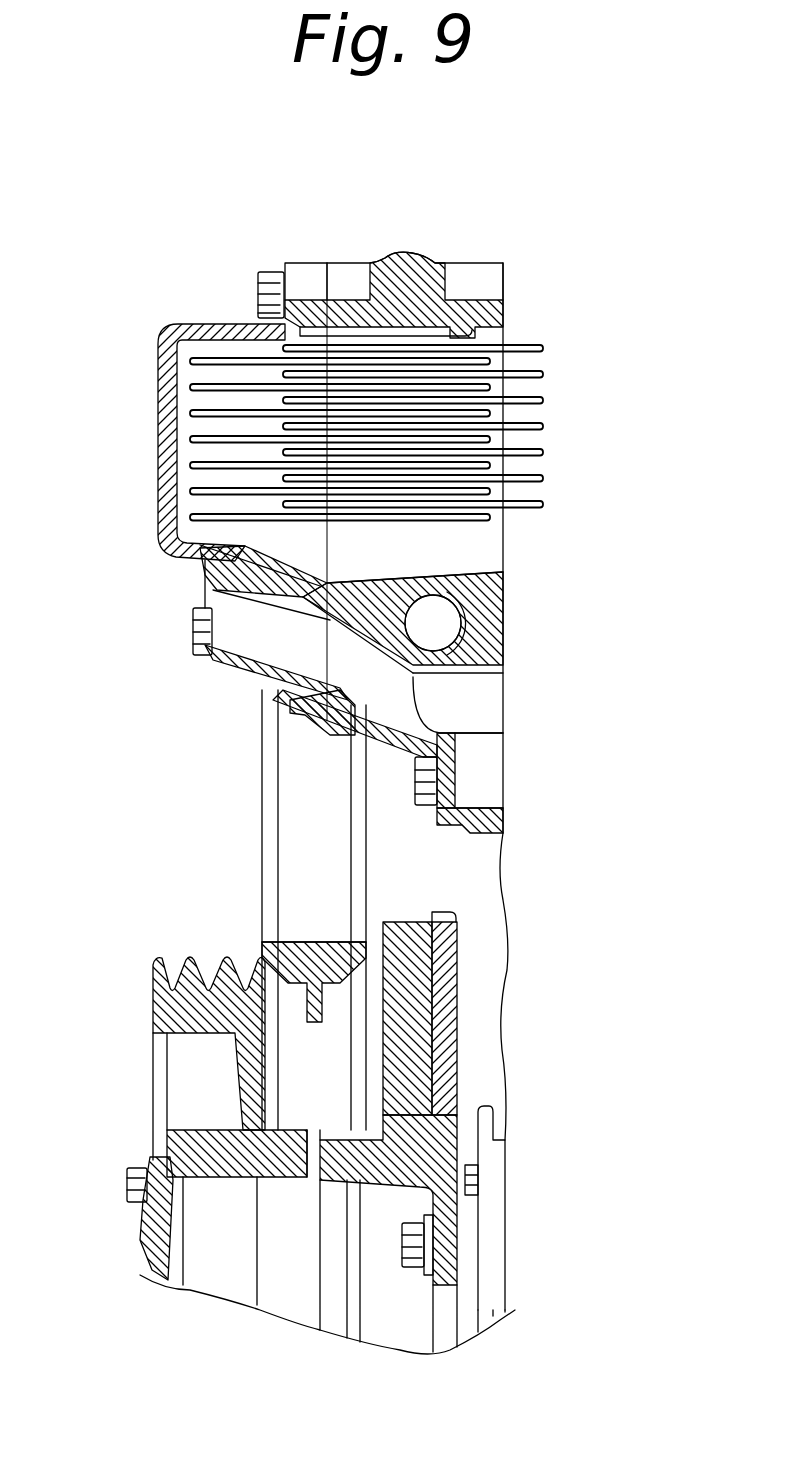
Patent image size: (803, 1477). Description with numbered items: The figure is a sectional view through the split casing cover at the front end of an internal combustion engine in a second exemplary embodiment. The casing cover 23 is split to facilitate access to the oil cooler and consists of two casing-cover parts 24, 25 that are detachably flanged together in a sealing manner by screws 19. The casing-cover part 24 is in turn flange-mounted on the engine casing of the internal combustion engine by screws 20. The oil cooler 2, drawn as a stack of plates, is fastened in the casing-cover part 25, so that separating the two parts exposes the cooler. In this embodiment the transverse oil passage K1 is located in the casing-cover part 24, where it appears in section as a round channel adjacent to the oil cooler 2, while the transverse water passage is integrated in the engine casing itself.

The oil cooler 2 is at (545, 455).
The screws 19 is at (195, 648).
The screws 20 is at (430, 812).
The casing cover 23 is at (157, 470).
The casing-cover part 24 is at (500, 318).
The casing-cover part 25 is at (290, 263).
The transverse oil passage K1 is at (455, 623).